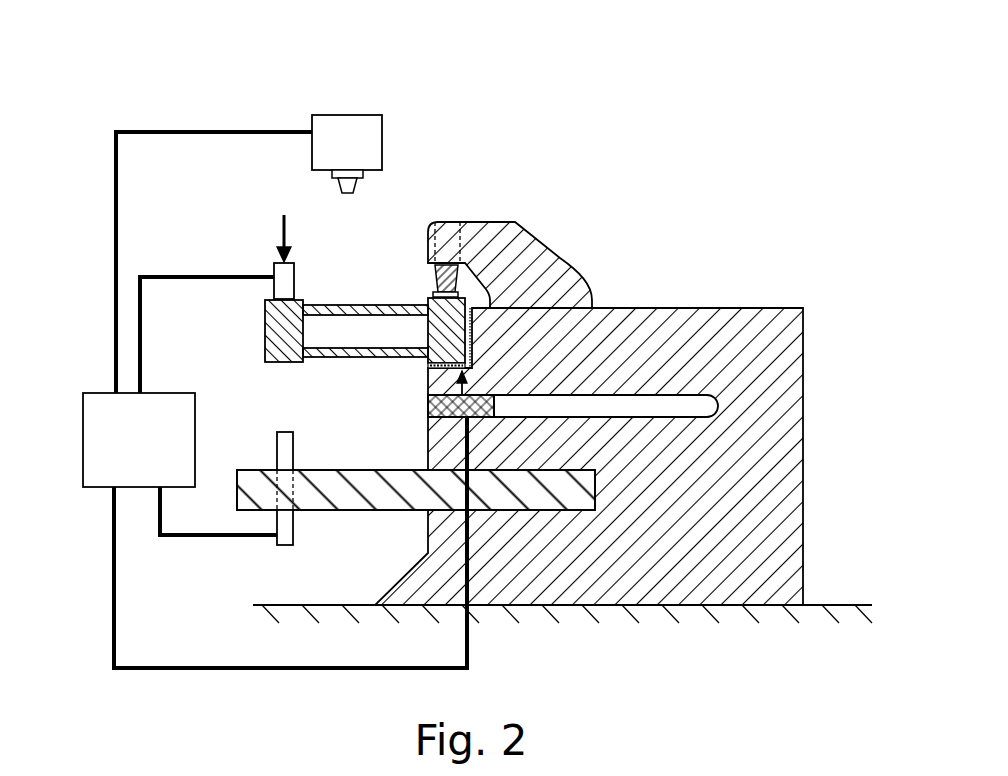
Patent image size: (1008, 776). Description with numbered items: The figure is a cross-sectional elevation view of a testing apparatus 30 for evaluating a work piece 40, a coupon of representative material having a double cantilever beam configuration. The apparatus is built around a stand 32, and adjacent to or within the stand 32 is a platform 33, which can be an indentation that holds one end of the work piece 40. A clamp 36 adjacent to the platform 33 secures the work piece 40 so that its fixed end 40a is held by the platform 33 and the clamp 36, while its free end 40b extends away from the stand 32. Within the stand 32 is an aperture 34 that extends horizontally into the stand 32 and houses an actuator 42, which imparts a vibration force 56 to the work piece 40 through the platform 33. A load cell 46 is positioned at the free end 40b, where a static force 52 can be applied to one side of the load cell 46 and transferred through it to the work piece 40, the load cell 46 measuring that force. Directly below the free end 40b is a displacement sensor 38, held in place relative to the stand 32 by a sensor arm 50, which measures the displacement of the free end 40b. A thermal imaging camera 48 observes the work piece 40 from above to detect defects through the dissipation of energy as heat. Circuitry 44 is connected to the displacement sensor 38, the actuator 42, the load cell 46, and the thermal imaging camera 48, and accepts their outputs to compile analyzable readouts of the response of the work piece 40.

The testing apparatus 30 is at (693, 181).
The stand 32 is at (723, 320).
The platform 33 is at (440, 370).
The aperture 34 is at (695, 405).
The clamp 36 is at (527, 237).
The displacement sensor 38 is at (280, 450).
The work piece 40 is at (343, 303).
The fixed end 40a is at (435, 308).
The free end 40b is at (272, 337).
The actuator 42 is at (430, 408).
The circuitry 44 is at (92, 435).
The load cell 46 is at (280, 270).
The thermal imaging camera 48 is at (337, 123).
The sensor arm 50 is at (368, 502).
The static force 52 is at (280, 232).
The vibration force 56 is at (430, 390).